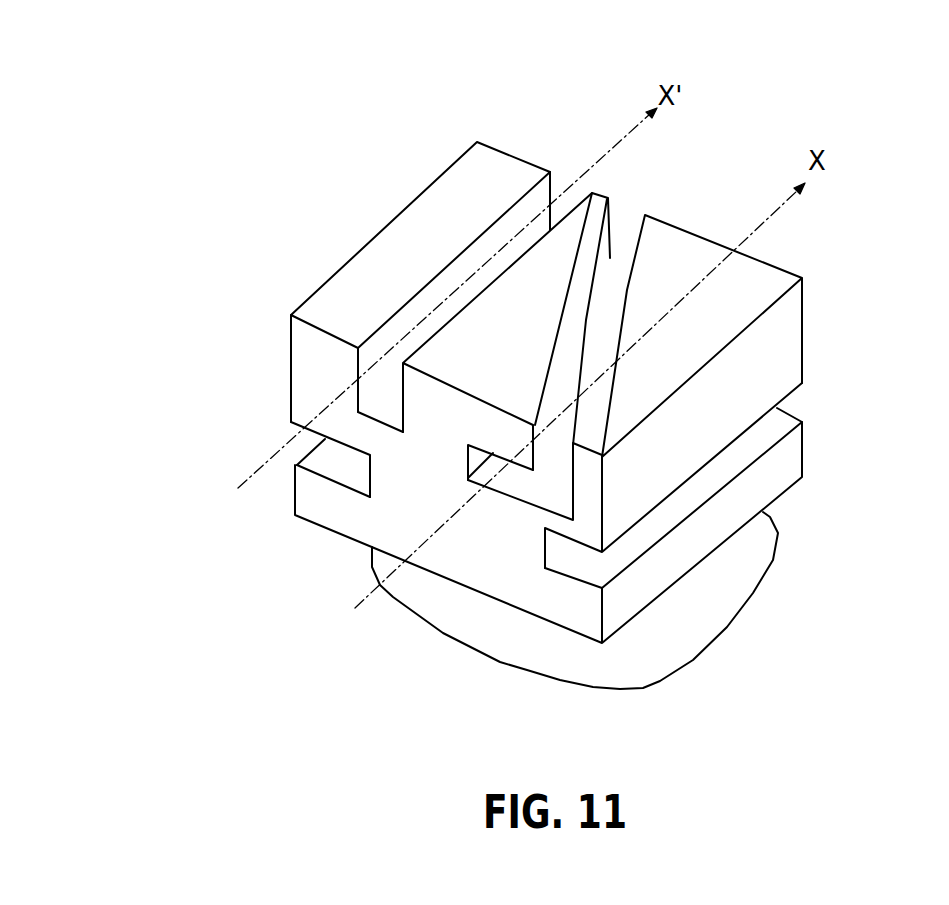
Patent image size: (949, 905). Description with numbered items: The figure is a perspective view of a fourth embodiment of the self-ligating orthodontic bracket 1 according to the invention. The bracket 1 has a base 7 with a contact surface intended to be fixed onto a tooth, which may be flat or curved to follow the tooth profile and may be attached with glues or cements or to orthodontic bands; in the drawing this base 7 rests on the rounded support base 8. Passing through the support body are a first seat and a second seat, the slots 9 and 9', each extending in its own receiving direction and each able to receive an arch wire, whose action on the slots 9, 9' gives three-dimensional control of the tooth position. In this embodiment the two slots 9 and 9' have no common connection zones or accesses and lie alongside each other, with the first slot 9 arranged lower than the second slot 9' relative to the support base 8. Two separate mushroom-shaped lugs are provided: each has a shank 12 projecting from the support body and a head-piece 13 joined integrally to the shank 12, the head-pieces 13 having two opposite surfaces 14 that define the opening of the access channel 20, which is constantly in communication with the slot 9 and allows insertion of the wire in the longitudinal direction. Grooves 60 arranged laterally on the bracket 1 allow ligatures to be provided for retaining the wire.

The self-ligating orthodontic bracket 1 is at (523, 401).
The head-piece 13 is at (513, 347).
The opposite surfaces 14 is at (630, 237).
The shank 12 is at (410, 503).
The first seat (slot) 9 is at (462, 581).
The second seat (slot) 9' is at (322, 507).
The access channel 20 is at (483, 478).
The grooves 60 is at (270, 436).
The base 7 is at (743, 572).
The support base 8 is at (603, 706).